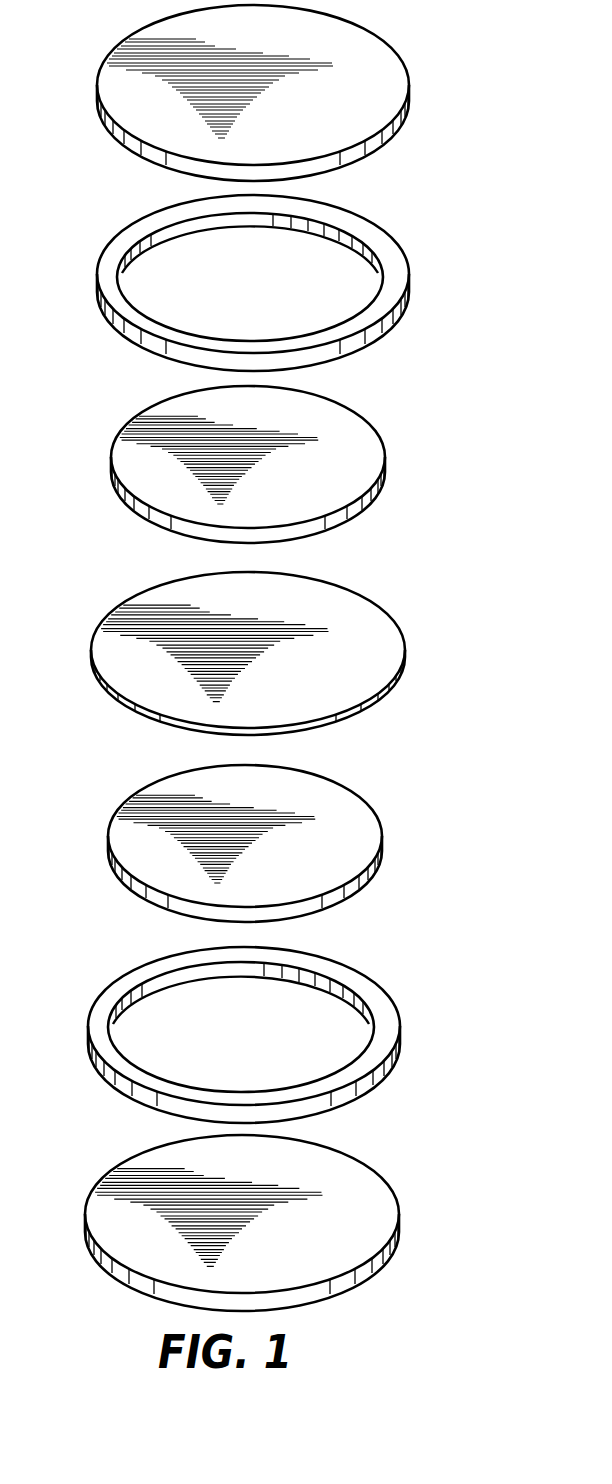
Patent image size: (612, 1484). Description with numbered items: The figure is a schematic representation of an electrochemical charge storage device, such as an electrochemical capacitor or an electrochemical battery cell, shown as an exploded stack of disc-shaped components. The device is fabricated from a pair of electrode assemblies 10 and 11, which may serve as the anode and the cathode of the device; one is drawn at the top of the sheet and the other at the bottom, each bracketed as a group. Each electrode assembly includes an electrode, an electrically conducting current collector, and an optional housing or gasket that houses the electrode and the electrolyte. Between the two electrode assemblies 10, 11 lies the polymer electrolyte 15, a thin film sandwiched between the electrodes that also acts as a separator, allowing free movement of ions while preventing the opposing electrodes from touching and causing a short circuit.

The electrode assembly 10 is at (268, 276).
The electrode assembly 11 is at (261, 1038).
The polymer electrolyte 15 is at (95, 670).